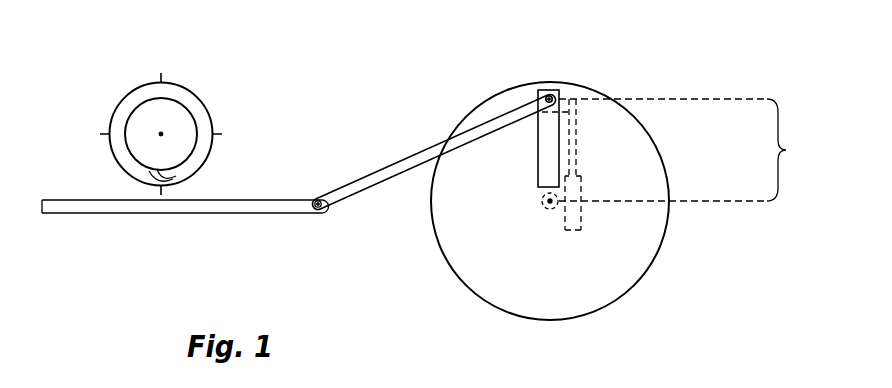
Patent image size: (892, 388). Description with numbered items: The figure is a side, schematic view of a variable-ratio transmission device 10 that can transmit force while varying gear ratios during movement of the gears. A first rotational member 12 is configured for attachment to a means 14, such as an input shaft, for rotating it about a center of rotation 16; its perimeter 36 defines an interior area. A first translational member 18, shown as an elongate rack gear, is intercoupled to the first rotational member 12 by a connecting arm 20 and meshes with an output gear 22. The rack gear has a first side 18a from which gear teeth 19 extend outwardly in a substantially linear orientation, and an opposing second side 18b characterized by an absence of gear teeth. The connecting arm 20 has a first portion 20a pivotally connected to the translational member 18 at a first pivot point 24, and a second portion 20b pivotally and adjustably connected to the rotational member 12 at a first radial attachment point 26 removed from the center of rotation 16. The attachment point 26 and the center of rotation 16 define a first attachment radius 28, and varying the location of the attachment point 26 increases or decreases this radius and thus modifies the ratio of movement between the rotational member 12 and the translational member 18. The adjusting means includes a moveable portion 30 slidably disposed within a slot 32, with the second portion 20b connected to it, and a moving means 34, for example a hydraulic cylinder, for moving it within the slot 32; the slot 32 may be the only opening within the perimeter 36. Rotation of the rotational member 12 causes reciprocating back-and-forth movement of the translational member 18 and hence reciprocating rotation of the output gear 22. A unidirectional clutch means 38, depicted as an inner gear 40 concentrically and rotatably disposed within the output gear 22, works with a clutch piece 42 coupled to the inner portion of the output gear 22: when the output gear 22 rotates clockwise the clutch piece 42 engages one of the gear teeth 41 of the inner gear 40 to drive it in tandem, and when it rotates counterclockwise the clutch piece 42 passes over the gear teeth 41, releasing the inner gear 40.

The transmission device 10 is at (323, 38).
The first rotational member 12 is at (483, 272).
The means for rotating 14 is at (550, 203).
The center of rotation 16 is at (552, 209).
The first translational member 18 is at (87, 207).
The first side 18a is at (302, 197).
The second side 18b is at (247, 213).
The gear teeth 19 is at (250, 192).
The connecting arm 20 is at (430, 153).
The first portion 20a is at (333, 193).
The second portion 20b is at (545, 97).
The output gear 22 is at (185, 80).
The first pivot point 24 is at (328, 210).
The first radial attachment point 26 is at (552, 84).
The first attachment radius 28 is at (694, 150).
The moveable portion 30 is at (548, 128).
The slot 32 is at (545, 172).
The moving means 34 is at (577, 152).
The perimeter 36 is at (532, 322).
The unidirectional clutch means 38 is at (123, 105).
The inner gear 40 is at (210, 103).
The gear teeth 41 is at (165, 187).
The clutch piece 42 is at (125, 176).